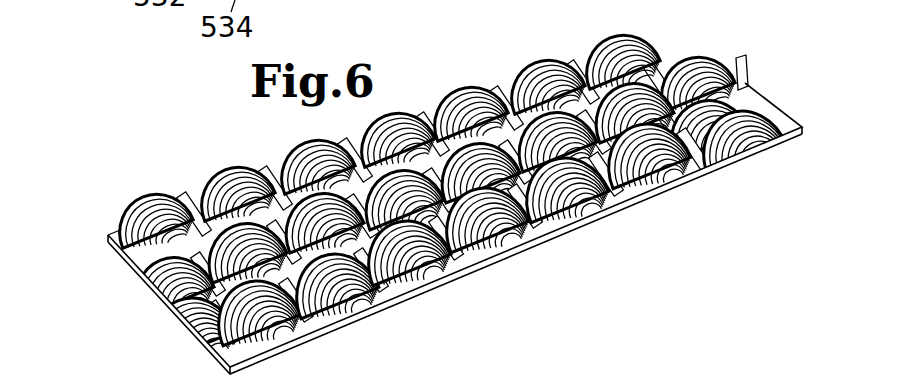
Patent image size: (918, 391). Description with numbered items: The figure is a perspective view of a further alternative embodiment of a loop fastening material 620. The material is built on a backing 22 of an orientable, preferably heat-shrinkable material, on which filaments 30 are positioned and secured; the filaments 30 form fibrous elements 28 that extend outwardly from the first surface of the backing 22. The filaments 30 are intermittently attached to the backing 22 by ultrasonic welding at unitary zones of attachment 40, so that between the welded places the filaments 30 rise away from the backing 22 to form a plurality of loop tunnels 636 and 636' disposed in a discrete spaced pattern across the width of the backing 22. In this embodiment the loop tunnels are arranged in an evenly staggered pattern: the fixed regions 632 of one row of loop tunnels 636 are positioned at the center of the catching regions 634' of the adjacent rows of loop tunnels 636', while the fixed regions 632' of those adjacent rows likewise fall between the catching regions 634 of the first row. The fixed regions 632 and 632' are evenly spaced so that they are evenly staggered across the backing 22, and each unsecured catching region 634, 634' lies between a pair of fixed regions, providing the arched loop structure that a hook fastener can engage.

The loop fastening material 620 is at (155, 159).
The backing 22 is at (158, 288).
The fibrous elements 28 is at (658, 44).
The filaments 30 is at (730, 60).
The unitary zones of attachment 40 is at (205, 262).
The fixed regions 632 is at (626, 213).
The fixed regions 632' is at (523, 108).
The catching regions 634 is at (645, 180).
The catching regions 634' is at (535, 78).
The loop tunnels 636 is at (346, 224).
The loop tunnels 636' is at (435, 113).